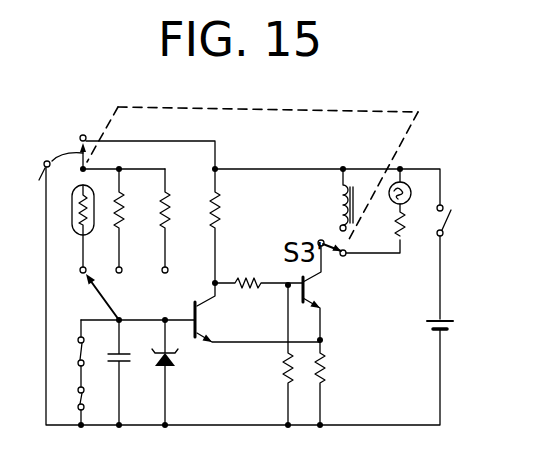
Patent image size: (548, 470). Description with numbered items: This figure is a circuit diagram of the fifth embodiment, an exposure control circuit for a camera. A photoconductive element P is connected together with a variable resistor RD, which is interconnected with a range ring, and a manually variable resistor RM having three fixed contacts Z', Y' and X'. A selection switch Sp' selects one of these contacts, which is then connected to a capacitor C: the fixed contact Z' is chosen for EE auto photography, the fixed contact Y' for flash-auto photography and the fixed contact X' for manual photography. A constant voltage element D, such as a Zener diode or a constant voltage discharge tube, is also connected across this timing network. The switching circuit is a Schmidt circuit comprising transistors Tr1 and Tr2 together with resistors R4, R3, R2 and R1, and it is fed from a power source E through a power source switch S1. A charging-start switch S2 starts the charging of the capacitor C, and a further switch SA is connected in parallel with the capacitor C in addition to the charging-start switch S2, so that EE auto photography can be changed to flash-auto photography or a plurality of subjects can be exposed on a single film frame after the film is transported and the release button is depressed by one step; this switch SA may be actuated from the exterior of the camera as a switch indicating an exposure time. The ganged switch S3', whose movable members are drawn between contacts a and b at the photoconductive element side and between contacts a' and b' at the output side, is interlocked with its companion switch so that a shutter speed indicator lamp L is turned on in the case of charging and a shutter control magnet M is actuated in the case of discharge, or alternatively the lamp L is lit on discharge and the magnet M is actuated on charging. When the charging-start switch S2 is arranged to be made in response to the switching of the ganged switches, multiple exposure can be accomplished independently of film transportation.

The switch S3' contact a is at (79, 137).
The switch S3' contact b is at (58, 149).
The ganged switch S3' is at (27, 184).
The photoconductive element P is at (74, 219).
The variable resistor RD is at (138, 218).
The manually variable resistor RM is at (185, 218).
The resistor R4 is at (235, 226).
The fixed contact Z' is at (70, 271).
The fixed contact Y' is at (108, 271).
The fixed contact X' is at (154, 271).
The selection switch Sp' is at (120, 297).
The switch SA is at (65, 334).
The charging-start switch S2 is at (65, 394).
The capacitor C is at (126, 372).
The constant voltage element D is at (174, 372).
The transistor Tr1 is at (257, 312).
The resistor R3 is at (259, 270).
The transistor Tr2 is at (335, 293).
The resistor R2 is at (271, 355).
The resistor R1 is at (339, 382).
The shutter control magnet M is at (332, 197).
The switch S3' contact b' is at (327, 229).
The switch S3' contact a' is at (369, 262).
The shutter speed indicator lamp L is at (408, 202).
The power source switch S1 is at (462, 226).
The power source E is at (452, 325).